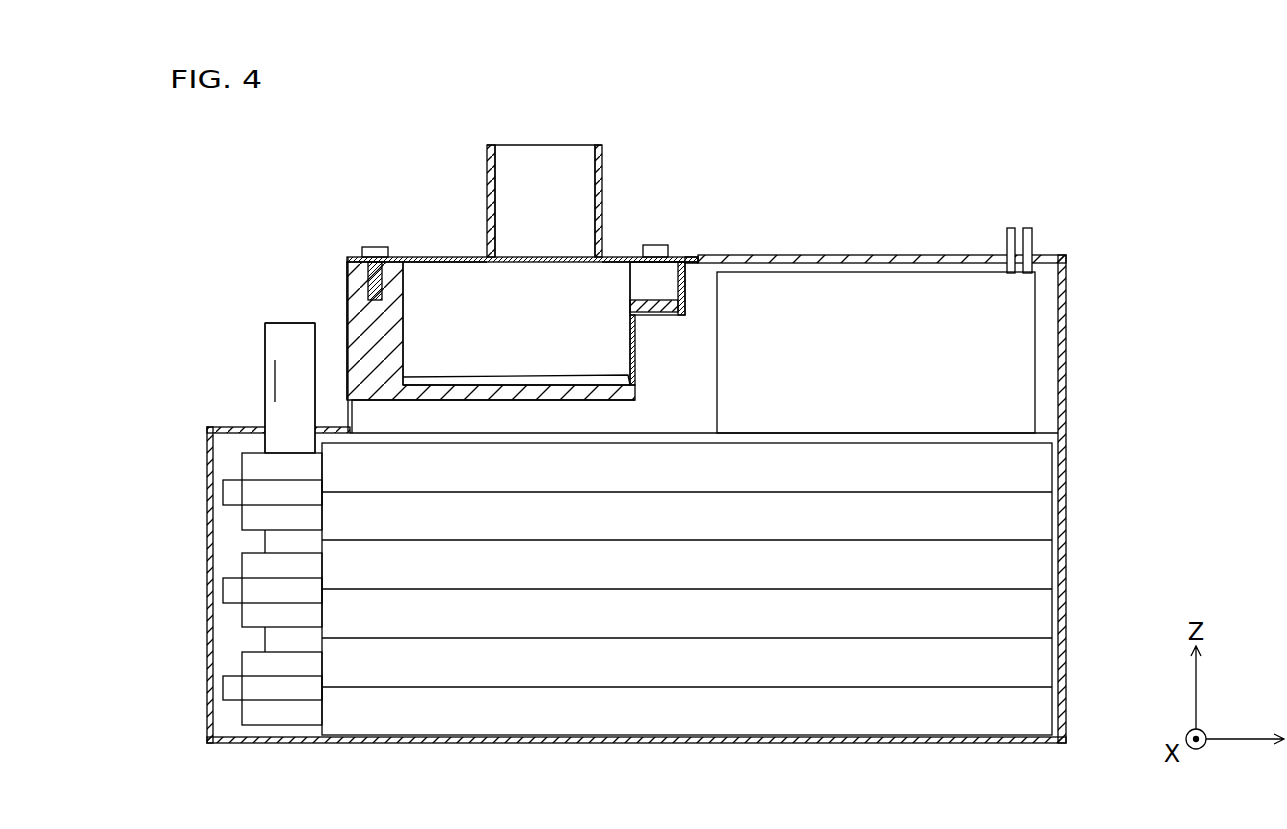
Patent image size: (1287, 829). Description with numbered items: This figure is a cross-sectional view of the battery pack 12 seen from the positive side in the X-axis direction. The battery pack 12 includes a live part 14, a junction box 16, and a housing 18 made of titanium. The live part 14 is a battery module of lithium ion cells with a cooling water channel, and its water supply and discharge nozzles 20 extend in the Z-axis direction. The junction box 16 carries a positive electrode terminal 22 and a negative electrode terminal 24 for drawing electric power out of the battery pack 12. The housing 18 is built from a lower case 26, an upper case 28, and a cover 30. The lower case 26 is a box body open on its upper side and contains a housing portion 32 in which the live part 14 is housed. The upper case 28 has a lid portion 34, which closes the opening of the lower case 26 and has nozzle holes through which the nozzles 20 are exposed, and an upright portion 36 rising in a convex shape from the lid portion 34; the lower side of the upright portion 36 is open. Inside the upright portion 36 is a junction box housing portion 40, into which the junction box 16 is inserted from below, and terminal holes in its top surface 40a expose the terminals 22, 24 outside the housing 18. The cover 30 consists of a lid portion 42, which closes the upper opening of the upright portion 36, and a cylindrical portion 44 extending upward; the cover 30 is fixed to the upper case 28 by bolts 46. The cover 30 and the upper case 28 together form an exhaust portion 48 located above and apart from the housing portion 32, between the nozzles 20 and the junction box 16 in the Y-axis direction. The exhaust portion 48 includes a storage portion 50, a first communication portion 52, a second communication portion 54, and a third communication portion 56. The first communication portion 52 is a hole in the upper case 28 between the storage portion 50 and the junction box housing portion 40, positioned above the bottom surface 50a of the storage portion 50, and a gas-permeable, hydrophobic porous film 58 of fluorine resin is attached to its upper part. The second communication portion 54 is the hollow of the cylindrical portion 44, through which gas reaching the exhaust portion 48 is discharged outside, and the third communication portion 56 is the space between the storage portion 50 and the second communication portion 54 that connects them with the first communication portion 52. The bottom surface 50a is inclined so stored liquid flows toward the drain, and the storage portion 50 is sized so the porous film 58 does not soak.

The battery pack 12 is at (978, 95).
The live part 14 is at (1062, 616).
The junction box 16 is at (1051, 339).
The housing 18 is at (1100, 267).
The water supply and discharge nozzles 20 is at (263, 345).
The positive electrode terminal 22 is at (1030, 228).
The negative electrode terminal 24 is at (1010, 228).
The lower case 26 is at (194, 627).
The upper case 28 is at (334, 284).
The cover 30 is at (410, 244).
The housing portion 32 is at (230, 545).
The lid portion 34 is at (232, 427).
The upright portion 36 is at (346, 299).
The junction box housing portion 40 is at (1043, 377).
The top surface 40a is at (800, 254).
The lid portion 42 is at (613, 252).
The cylindrical portion 44 is at (604, 180).
The bolts 46 is at (372, 246).
The exhaust portion 48 is at (451, 269).
The storage portion 50 is at (550, 350).
The bottom surface 50a is at (515, 378).
The first communication portion 52 is at (663, 316).
The second communication portion 54 is at (543, 160).
The third communication portion 56 is at (480, 268).
The porous film 58 is at (630, 300).